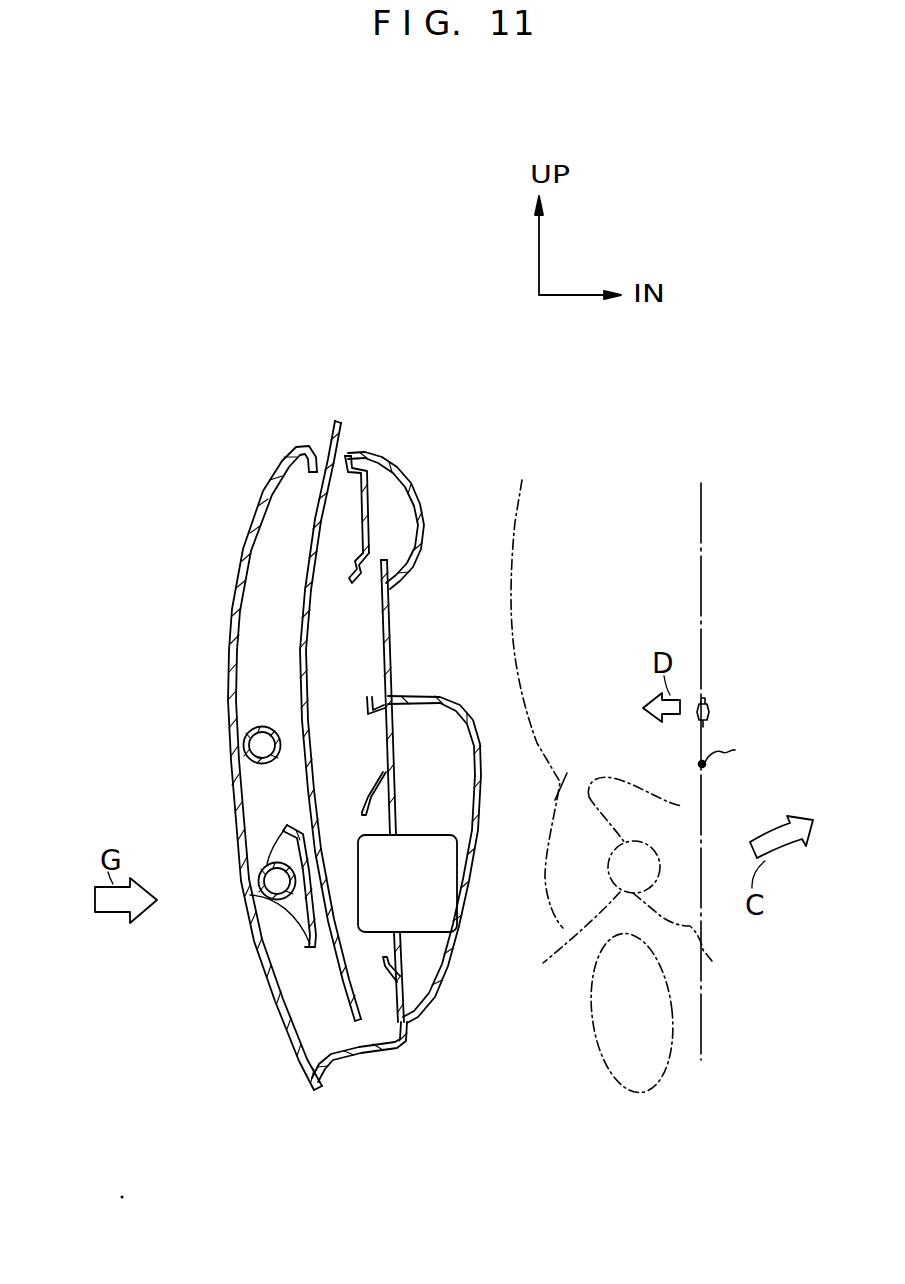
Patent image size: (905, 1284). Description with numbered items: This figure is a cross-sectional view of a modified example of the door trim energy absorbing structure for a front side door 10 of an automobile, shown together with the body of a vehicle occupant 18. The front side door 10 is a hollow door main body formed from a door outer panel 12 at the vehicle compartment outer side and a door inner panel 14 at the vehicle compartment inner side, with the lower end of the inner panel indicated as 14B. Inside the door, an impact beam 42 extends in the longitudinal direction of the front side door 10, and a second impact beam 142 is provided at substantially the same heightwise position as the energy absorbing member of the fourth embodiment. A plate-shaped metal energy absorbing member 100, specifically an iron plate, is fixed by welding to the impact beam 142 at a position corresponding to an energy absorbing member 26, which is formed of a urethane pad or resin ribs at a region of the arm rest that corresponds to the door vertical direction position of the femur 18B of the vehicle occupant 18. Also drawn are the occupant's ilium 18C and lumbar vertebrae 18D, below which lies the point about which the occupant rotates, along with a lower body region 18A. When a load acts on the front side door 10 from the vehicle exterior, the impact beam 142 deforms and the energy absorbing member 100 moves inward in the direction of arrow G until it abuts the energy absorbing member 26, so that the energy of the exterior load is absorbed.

The front side door 10 is at (266, 416).
The door outer panel 12 is at (258, 513).
The door inner panel 14 is at (364, 545).
The lower flange of inner frame 14B is at (323, 1073).
The energy absorbing member 26 is at (443, 903).
The impact beam 42 is at (256, 729).
The impact beam 142 is at (265, 888).
The energy absorbing member 100 is at (312, 950).
The vehicle occupant 18 is at (517, 517).
The occupant lower portion 18A is at (718, 960).
The femur 18B is at (593, 972).
The ilium 18C is at (598, 770).
The lumbar vertebrae 18D is at (709, 703).